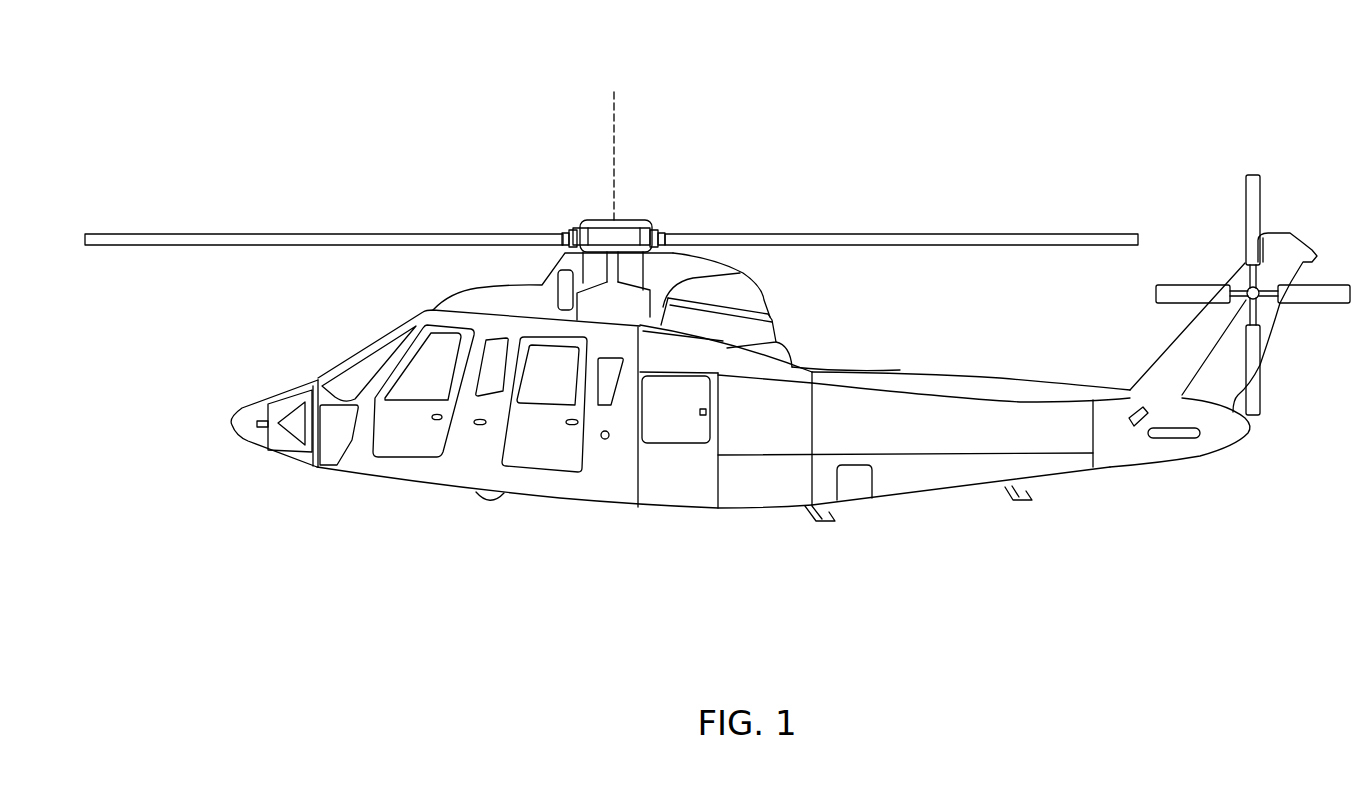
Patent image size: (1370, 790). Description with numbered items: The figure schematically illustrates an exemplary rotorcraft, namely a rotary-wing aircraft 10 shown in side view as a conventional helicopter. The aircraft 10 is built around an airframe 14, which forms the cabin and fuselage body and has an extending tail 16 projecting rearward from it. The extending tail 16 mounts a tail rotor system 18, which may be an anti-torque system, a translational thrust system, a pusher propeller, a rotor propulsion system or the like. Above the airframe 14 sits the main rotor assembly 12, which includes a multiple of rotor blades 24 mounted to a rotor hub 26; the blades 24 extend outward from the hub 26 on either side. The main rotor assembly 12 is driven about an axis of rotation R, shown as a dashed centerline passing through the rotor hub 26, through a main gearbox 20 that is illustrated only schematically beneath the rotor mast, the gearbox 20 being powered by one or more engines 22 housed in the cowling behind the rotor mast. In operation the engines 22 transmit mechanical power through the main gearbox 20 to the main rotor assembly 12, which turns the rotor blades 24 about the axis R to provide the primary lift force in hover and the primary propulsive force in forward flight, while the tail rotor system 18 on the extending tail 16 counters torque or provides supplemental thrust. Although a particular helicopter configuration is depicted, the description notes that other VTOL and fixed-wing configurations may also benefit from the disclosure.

The rotary-wing aircraft 10 is at (742, 104).
The main rotor assembly 12 is at (600, 222).
The airframe 14 is at (388, 470).
The extending tail 16 is at (1045, 468).
The tail rotor system 18 is at (1282, 195).
The main gearbox 20 is at (597, 307).
The engine 22 is at (740, 325).
The rotor blade 24 is at (795, 233).
The rotor hub 26 is at (625, 220).
The axis of rotation R is at (618, 130).